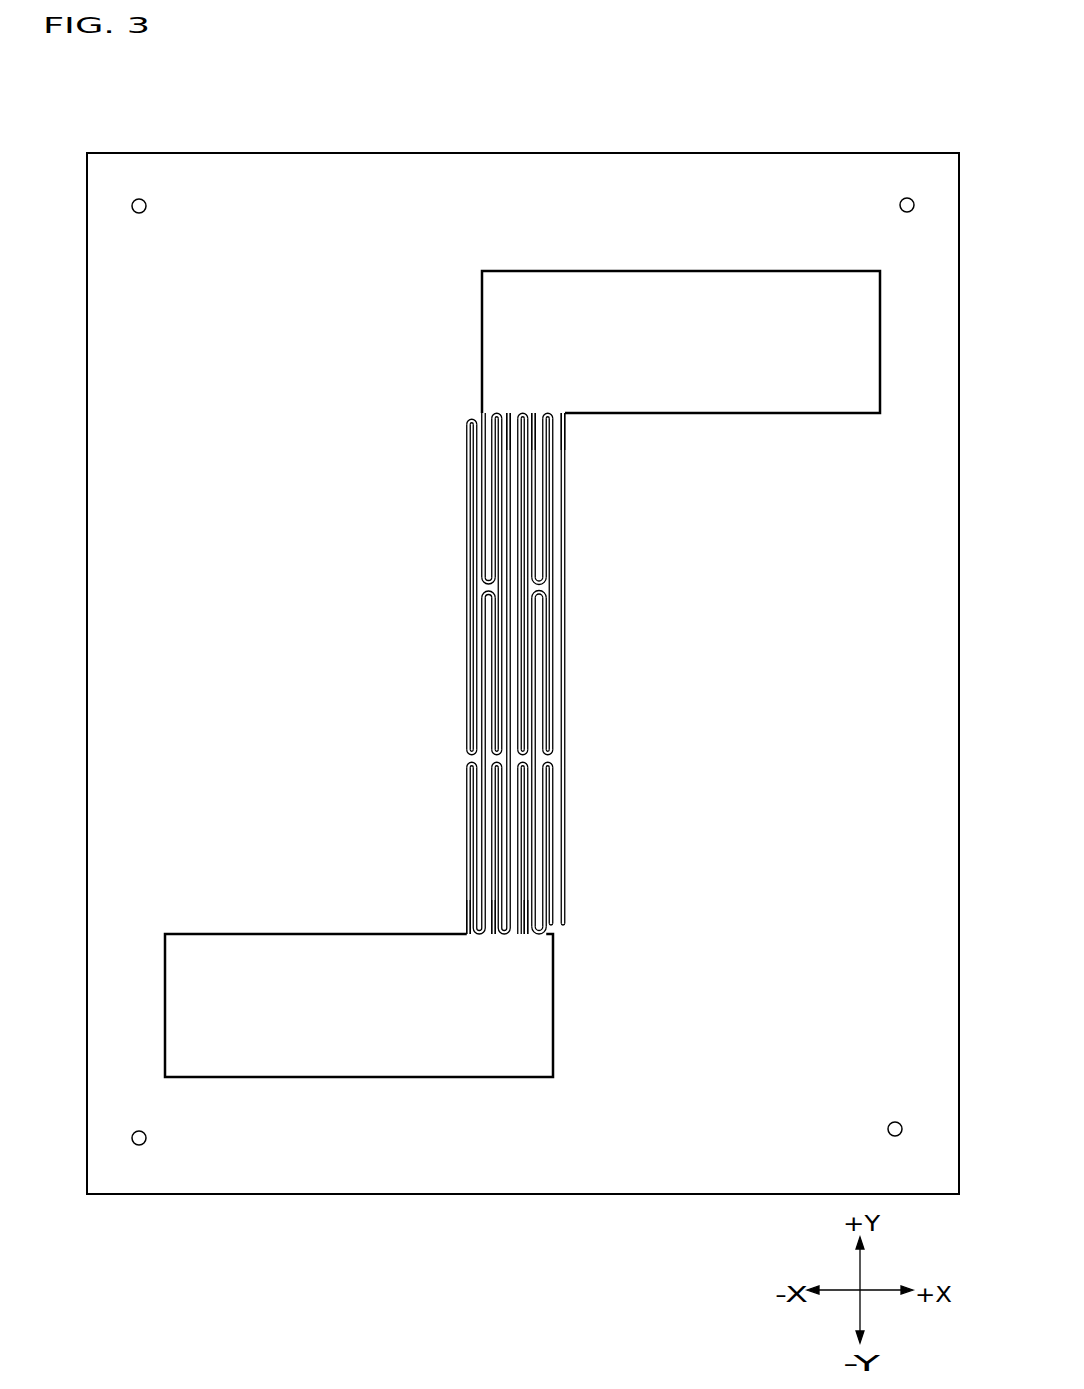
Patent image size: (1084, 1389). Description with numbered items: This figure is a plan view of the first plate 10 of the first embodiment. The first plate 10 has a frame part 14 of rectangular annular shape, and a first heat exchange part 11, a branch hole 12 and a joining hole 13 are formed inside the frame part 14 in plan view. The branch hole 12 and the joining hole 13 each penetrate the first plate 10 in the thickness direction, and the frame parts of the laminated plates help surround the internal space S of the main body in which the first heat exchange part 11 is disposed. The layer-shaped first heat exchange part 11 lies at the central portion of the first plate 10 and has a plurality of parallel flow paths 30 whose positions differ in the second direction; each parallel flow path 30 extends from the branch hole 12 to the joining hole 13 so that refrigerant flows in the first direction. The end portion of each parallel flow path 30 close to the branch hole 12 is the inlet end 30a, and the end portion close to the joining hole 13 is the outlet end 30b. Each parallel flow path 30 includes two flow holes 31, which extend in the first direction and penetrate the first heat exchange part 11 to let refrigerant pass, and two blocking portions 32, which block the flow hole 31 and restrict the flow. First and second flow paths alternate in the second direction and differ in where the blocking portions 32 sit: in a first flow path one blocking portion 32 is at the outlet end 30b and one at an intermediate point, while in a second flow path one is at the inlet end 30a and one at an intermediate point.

The first plate 10 is at (73, 130).
The first heat exchange part 11 is at (443, 668).
The branch hole 12 is at (553, 1052).
The joining hole 13 is at (482, 306).
The frame part 14 is at (838, 196).
The internal space S is at (744, 318).
The parallel flow path 30 is at (455, 985).
The inlet end 30a is at (521, 950).
The outlet end 30b is at (504, 398).
The flow hole 31 is at (497, 566).
The blocking portion 32 is at (466, 411).